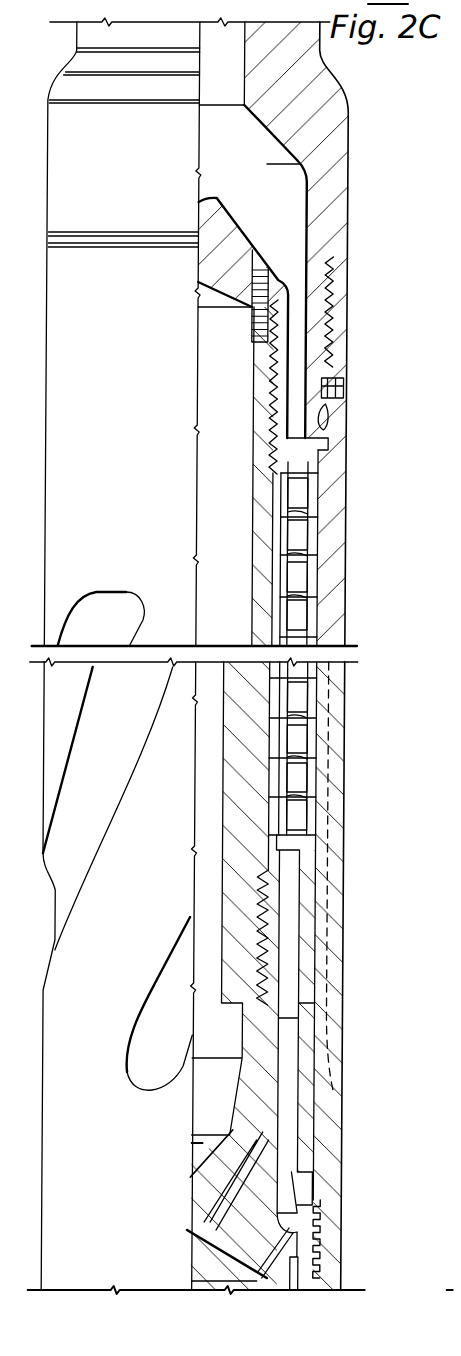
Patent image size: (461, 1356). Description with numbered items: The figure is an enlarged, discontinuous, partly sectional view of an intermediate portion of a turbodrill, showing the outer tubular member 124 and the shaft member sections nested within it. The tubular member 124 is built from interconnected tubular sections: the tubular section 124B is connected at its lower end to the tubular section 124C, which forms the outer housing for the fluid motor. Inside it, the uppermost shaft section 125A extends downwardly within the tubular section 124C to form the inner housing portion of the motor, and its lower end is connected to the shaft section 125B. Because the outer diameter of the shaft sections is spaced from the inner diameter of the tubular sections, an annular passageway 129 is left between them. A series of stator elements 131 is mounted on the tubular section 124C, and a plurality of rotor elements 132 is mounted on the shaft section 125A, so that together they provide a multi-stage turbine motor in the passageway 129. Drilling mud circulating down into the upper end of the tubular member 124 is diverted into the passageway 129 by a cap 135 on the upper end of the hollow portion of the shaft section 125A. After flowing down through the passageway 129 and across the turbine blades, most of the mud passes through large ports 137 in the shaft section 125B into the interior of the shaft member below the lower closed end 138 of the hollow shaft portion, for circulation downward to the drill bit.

The tubular member 124 is at (352, 487).
The tubular section 124B is at (353, 118).
The tubular section 124C is at (350, 862).
The uppermost section of shaft member 125A is at (284, 462).
The section of shaft member 125B is at (303, 1013).
The annular passageway 129 is at (298, 908).
The stator elements 131 is at (303, 699).
The rotor elements 132 is at (302, 812).
The cap 135 is at (220, 205).
The large ports 137 is at (240, 1206).
The lower closed end 138 is at (207, 1144).